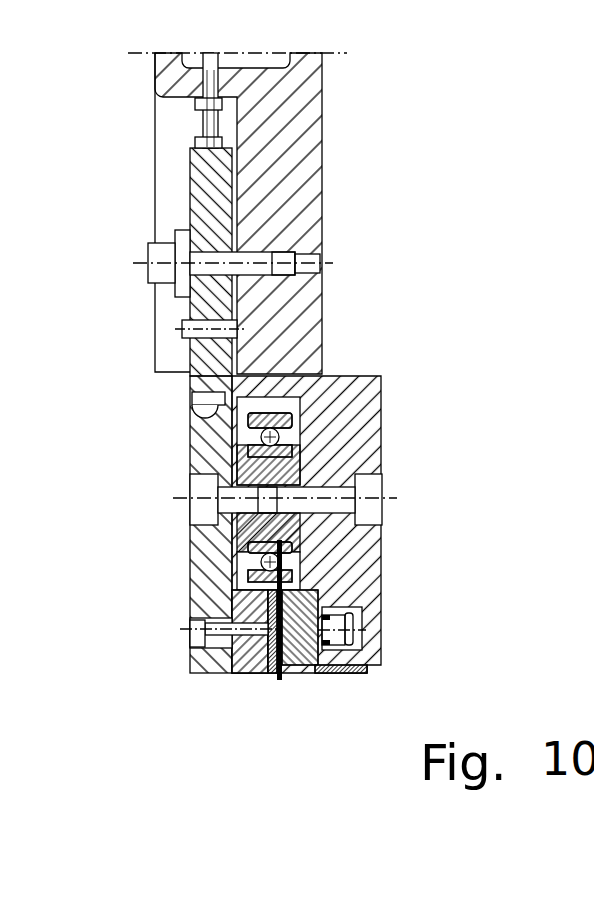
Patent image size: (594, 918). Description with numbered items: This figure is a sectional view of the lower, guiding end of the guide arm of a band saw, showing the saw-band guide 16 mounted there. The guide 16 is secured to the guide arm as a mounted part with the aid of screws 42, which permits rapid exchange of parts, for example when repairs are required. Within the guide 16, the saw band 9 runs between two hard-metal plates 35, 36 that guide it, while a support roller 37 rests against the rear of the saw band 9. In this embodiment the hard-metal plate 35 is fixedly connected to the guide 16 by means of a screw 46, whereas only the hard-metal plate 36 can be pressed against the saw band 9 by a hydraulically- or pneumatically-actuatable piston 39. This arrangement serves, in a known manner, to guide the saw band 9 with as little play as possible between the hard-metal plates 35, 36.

The saw band 9 is at (279, 680).
The saw-band guide 16 is at (348, 429).
The hard-metal plate 35 is at (243, 667).
The hard-metal plate 36 is at (307, 663).
The support roller 37 is at (272, 416).
The piston 39 is at (375, 665).
The screw 42 is at (160, 262).
The screw 46 is at (193, 632).